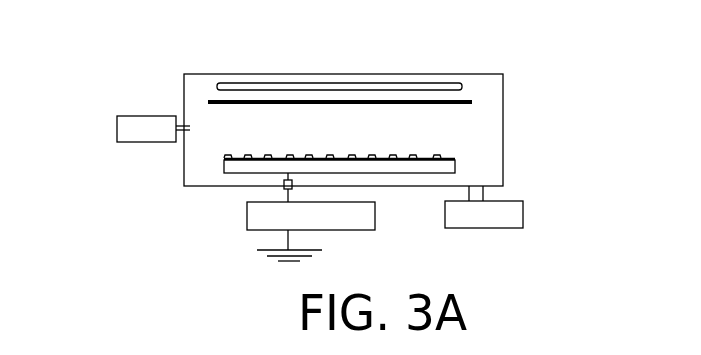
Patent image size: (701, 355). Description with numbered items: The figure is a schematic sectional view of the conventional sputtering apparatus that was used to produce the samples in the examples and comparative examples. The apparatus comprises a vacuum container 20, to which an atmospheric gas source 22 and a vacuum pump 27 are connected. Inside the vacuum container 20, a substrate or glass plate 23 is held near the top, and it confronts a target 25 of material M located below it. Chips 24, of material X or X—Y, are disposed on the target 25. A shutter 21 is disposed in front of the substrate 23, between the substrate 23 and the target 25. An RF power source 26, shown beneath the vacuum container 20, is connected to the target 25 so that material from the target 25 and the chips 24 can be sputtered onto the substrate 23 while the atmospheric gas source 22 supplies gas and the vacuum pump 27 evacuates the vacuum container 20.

The vacuum container 20 is at (437, 74).
The shutter 21 is at (223, 101).
The atmospheric gas source 22 is at (117, 127).
The substrate 23 is at (462, 86).
The chips 24 is at (433, 157).
The target 25 is at (455, 158).
The RF power source 26 is at (247, 214).
The vacuum pump 27 is at (523, 216).